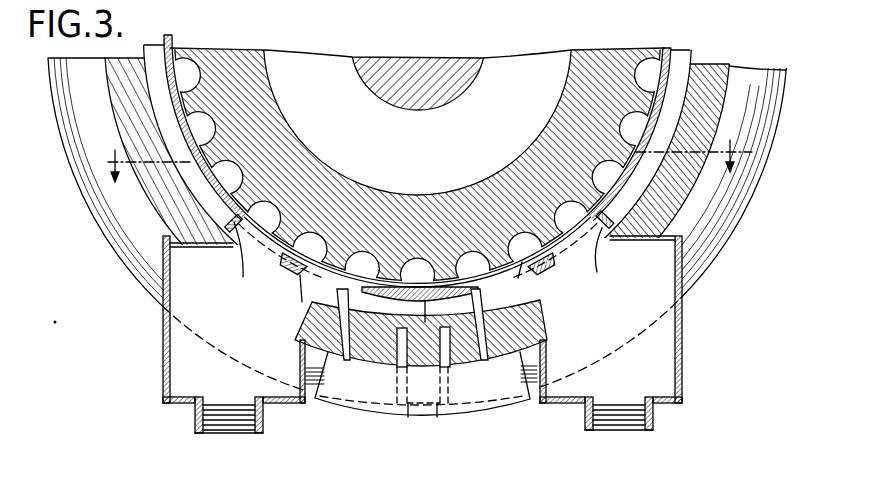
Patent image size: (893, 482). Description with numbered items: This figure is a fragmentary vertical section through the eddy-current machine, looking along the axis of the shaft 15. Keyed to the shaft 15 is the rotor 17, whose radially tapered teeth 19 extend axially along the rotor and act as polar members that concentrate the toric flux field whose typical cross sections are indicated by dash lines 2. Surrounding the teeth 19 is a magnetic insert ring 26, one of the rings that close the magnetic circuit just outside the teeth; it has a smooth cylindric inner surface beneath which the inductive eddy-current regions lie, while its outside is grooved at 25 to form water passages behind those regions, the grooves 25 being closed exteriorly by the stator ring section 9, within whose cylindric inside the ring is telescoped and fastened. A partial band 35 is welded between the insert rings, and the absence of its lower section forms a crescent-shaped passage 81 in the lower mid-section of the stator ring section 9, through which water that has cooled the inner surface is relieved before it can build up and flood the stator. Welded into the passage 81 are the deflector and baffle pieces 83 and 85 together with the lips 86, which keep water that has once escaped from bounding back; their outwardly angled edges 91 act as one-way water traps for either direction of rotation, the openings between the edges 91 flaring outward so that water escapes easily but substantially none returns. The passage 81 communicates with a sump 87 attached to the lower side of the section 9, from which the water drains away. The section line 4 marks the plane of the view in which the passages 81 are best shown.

The dash lines 2 is at (755, 62).
The section line 4- 4 is at (423, 164).
The stator ring section 9 is at (686, 193).
The shaft 15 is at (407, 70).
The rotor 17 is at (560, 117).
The teeth 19 is at (188, 98).
The grooves 25 is at (152, 62).
The magnetic insert ring 26 is at (142, 85).
The partial band 35 is at (171, 38).
The crescent-shaped passage 81 is at (345, 350).
The deflector and baffle piece 83 is at (290, 275).
The deflector and baffle piece 85 is at (428, 305).
The lips 86 is at (236, 240).
The sump 87 is at (175, 348).
The outwardly angled edges 91 is at (277, 258).